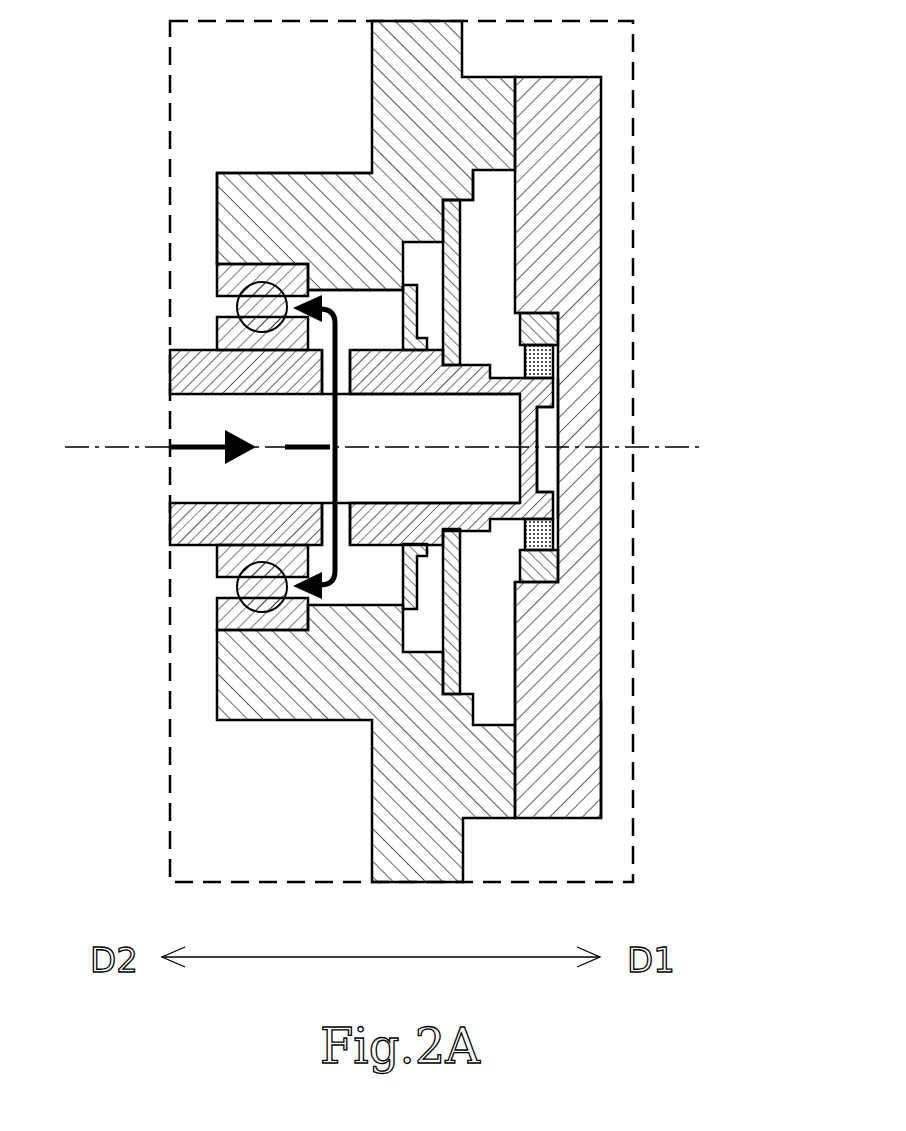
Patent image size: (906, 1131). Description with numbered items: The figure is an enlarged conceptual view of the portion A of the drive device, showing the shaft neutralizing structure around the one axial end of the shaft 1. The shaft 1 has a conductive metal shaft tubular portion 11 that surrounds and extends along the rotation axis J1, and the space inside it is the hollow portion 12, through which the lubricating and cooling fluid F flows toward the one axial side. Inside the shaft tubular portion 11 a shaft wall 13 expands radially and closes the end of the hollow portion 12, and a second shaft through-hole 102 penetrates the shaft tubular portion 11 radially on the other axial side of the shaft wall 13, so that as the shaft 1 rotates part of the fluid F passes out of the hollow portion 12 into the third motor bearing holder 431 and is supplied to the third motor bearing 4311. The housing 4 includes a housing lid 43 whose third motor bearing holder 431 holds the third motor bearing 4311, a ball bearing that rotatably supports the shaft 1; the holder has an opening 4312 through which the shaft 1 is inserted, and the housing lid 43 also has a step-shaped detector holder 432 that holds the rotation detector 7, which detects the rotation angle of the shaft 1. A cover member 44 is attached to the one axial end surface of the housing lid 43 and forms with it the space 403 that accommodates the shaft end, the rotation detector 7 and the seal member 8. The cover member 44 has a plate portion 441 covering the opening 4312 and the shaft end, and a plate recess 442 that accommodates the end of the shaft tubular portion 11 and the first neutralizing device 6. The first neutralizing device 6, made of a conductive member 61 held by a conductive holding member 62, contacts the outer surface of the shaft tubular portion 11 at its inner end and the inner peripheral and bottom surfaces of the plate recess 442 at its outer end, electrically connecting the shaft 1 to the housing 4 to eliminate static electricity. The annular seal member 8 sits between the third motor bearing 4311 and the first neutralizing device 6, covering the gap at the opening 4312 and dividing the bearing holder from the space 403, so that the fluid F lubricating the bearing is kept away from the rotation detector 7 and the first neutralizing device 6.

The shaft 1 is at (395, 446).
The shaft tubular portion 11 is at (197, 525).
The hollow portion 12 is at (202, 483).
The shaft wall 13 is at (530, 428).
The second shaft through-hole 102 is at (318, 375).
The housing 4 is at (423, 451).
The housing lid 43 is at (401, 451).
The third motor bearing holder 431 is at (233, 215).
The third motor bearing 4311 is at (230, 287).
The opening 4312 is at (353, 287).
The detector holder 432 is at (460, 187).
The cover member 44 is at (644, 447).
The plate portion 441 is at (560, 757).
The plate recess 442 is at (560, 483).
The space 403 is at (493, 660).
The first neutralizing device 6 is at (623, 468).
The conductive member 61 is at (545, 540).
The holding member 62 is at (558, 566).
The rotation detector 7 is at (455, 232).
The seal member 8 is at (413, 317).
The portion A is at (170, 77).
The fluid F is at (202, 445).
The rotation axis J1 is at (135, 447).